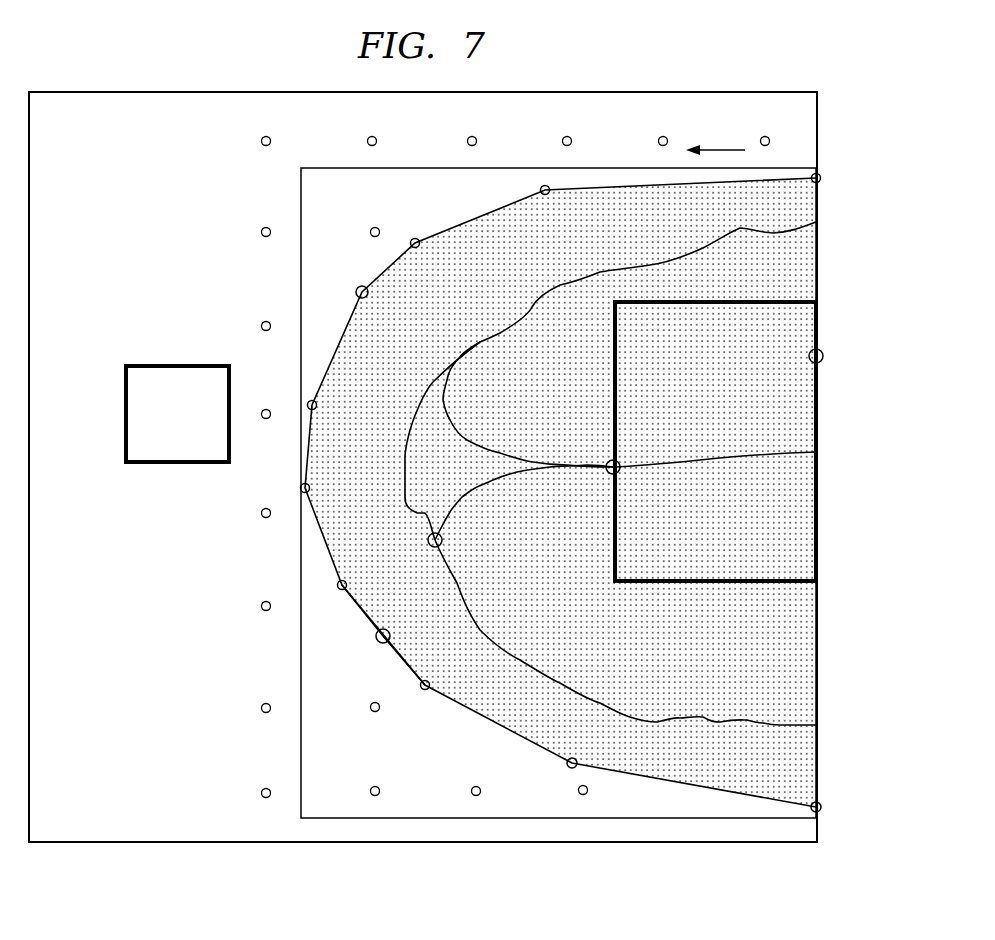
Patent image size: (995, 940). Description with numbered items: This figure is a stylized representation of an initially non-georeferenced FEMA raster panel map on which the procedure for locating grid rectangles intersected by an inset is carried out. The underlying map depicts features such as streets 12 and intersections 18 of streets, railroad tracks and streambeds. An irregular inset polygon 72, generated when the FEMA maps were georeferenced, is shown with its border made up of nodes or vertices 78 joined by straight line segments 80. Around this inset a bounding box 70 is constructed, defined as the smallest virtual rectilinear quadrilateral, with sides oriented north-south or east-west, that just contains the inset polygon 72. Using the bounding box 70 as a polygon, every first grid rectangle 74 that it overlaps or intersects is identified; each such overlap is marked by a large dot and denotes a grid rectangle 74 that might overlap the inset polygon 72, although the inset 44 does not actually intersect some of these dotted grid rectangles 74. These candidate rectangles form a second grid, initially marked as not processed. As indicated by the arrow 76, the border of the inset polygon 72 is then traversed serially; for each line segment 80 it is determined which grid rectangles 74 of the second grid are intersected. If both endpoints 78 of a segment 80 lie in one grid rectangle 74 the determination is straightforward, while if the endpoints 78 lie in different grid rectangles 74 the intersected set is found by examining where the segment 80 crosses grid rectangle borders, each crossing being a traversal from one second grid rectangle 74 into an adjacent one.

The streets 12 is at (703, 248).
The intersections 18 is at (606, 463).
The inset 44 is at (804, 672).
The bounding box 70 is at (381, 651).
The inset polygon 72 is at (446, 229).
The grid rectangle 74 is at (178, 466).
The arrow 76 is at (720, 150).
The nodes or vertices 78 is at (356, 287).
The straight line segments 80 is at (824, 356).